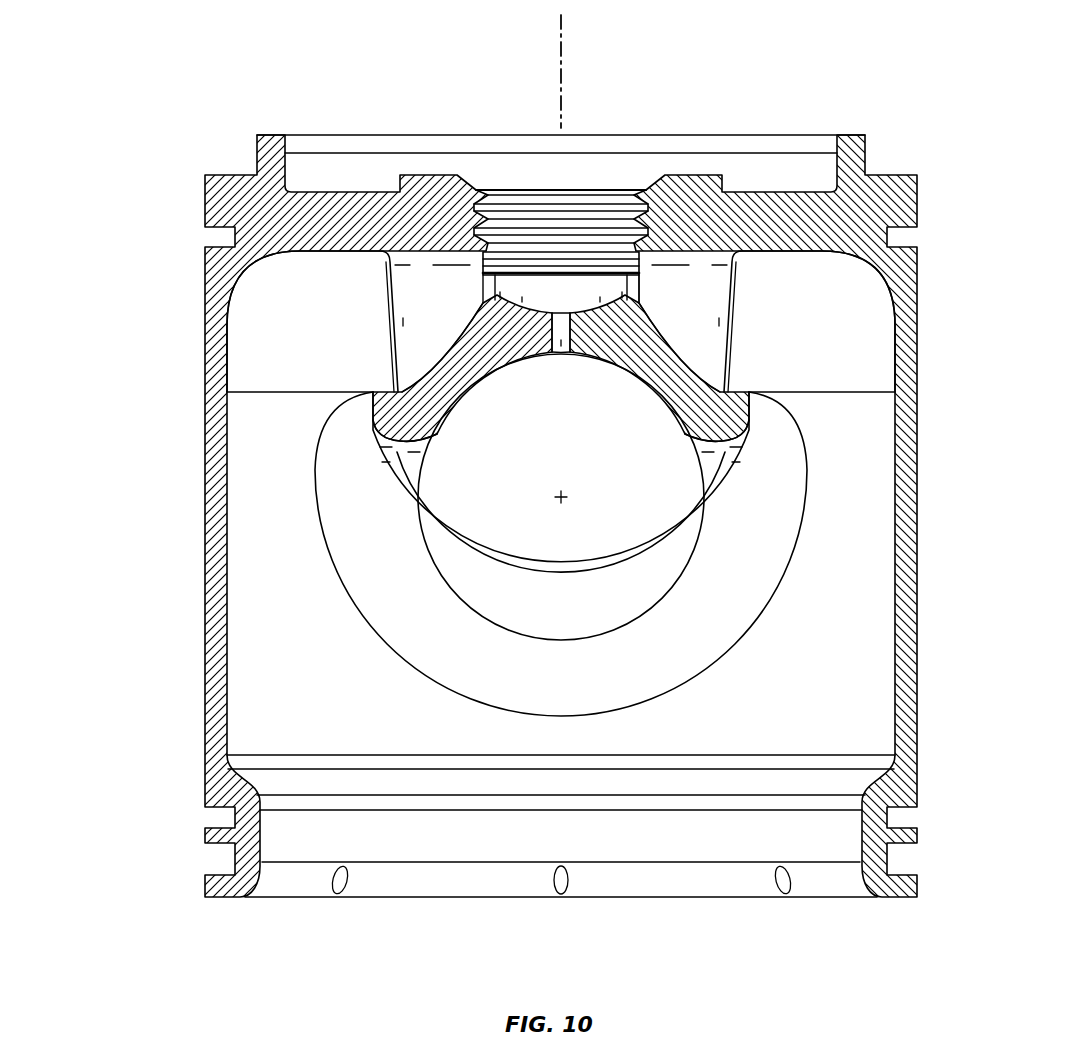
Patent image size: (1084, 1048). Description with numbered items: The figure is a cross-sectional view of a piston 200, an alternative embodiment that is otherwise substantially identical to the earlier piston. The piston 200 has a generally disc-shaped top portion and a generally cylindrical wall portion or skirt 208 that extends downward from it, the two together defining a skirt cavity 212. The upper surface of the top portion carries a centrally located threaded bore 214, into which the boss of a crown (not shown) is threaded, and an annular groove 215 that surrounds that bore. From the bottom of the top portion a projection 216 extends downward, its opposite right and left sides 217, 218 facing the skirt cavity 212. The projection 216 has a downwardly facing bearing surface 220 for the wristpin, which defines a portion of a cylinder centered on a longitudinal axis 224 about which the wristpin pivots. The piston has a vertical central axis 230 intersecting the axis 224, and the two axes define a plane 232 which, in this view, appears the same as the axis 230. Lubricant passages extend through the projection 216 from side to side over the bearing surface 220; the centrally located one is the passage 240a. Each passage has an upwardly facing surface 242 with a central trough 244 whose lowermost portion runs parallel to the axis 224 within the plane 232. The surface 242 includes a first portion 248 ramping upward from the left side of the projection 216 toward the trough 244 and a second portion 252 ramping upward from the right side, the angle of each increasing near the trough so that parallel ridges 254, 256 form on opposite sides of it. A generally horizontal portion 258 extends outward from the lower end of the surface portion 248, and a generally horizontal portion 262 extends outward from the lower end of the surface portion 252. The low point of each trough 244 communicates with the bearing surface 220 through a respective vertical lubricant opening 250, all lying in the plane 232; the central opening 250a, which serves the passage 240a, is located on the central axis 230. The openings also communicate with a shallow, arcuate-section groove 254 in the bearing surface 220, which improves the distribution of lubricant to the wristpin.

The piston 200 is at (156, 118).
The skirt 208 is at (205, 588).
The skirt cavity 212 is at (312, 680).
The threaded bore 214 is at (498, 187).
The annular groove 215 is at (298, 185).
The projection 216 is at (440, 412).
The right side of projection 217 is at (358, 328).
The left side of projection 218 is at (764, 339).
The bearing surface 220 is at (675, 412).
The longitudinal axis 224 is at (556, 505).
The vertical central axis 230 is at (558, 47).
The plane 232 is at (562, 22).
The central lubricant passage 240a is at (425, 285).
The upwardly facing surface 242 is at (682, 323).
The central trough 244 is at (574, 288).
The first surface portion 248 is at (438, 366).
The lubricant opening 250 is at (531, 286).
The central lubricant opening 250a is at (566, 336).
The second surface portion 252 is at (680, 352).
The ridge / groove 254 is at (487, 290).
The ridge 256 is at (630, 292).
The horizontal portion 258 is at (386, 392).
The horizontal portion 262 is at (737, 392).